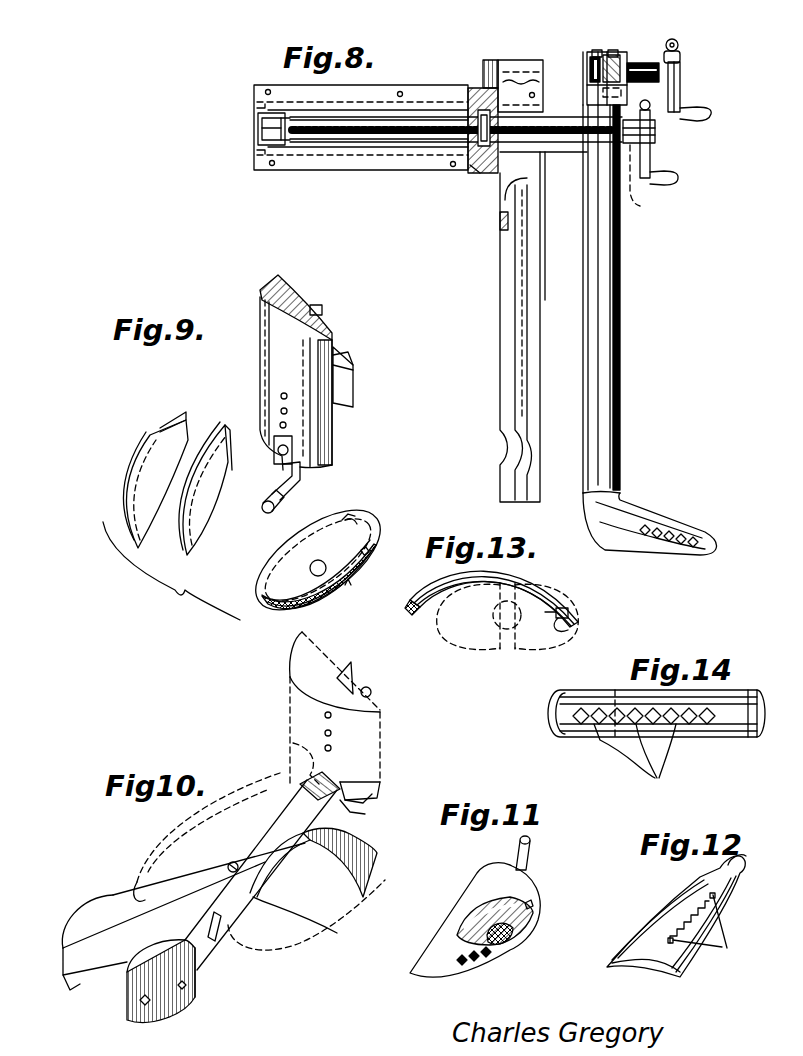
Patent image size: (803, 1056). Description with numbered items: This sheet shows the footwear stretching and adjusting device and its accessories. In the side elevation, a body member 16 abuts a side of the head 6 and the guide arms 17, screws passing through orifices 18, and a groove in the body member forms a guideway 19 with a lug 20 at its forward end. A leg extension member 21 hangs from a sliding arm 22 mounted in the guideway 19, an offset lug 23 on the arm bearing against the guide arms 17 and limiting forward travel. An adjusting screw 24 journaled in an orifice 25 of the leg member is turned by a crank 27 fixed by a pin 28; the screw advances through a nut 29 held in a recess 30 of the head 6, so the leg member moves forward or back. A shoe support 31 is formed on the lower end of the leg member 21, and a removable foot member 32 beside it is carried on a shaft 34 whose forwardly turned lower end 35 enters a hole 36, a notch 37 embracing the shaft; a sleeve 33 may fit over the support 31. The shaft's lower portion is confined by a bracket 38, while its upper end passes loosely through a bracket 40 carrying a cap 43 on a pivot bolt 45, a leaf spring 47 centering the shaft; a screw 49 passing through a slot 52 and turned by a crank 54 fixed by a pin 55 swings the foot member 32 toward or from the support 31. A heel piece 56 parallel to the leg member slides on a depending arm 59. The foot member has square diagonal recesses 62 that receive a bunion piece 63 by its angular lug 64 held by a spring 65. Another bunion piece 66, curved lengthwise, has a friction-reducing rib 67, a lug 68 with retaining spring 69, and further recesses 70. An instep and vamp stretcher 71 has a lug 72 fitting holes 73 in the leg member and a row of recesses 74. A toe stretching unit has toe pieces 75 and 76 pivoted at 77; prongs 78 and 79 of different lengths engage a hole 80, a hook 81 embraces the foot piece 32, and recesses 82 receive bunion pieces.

In FIG. 8, the head 6 is at (470, 90).
In FIG. 8, the body member 16 is at (258, 129).
In FIG. 8, the guide arms 17 is at (316, 88).
In FIG. 8, the orifices 18 is at (266, 93).
In FIG. 8, the guideway 19 is at (259, 106).
In FIG. 8, the lug 20 is at (555, 156).
In FIG. 8, the leg extension member 21 is at (622, 323).
In FIG. 9, the leg extension member 21 is at (262, 368).
In FIG. 10, the leg extension member 21 is at (390, 745).
In FIG. 8, the sliding arm 22 is at (578, 168).
In FIG. 8, the offset lug 23 is at (258, 138).
In FIG. 8, the adjusting screw 24 is at (348, 138).
In FIG. 8, the orifice 25 is at (640, 197).
In FIG. 8, the crank 27 is at (678, 178).
In FIG. 8, the pin 28 is at (655, 134).
In FIG. 8, the nut 29 is at (486, 166).
In FIG. 8, the recess 30 is at (487, 88).
In FIG. 8, the shoe support 31 is at (632, 510).
In FIG. 9, the shoe support 31 is at (208, 546).
In FIG. 10, the shoe support 31 is at (141, 868).
In FIG. 13, the shoe support 31 is at (470, 650).
In FIG. 9, the foot member 32 is at (266, 578).
In FIG. 10, the foot member 32 is at (278, 939).
In FIG. 13, the foot member 32 is at (528, 652).
In FIG. 9, the sleeve 33 is at (150, 544).
In FIG. 9, the shaft 34 is at (322, 310).
In FIG. 10, the shaft 34 is at (380, 694).
In FIG. 11, the shaft 34 is at (531, 845).
In FIG. 9, the forwardly turned lower end 35 is at (274, 514).
In FIG. 10, the forwardly turned lower end 35 is at (374, 812).
In FIG. 9, the hole 36 is at (335, 525).
In FIG. 9, the notch 37 is at (361, 514).
In FIG. 9, the bracket 38 is at (355, 388).
In FIG. 8, the bracket 40 is at (588, 92).
In FIG. 8, the cap 43 is at (616, 54).
In FIG. 8, the pivot bolt 45 is at (596, 53).
In FIG. 8, the leaf spring 47 is at (594, 80).
In FIG. 8, the screw 49 is at (681, 86).
In FIG. 8, the slot 52 is at (644, 62).
In FIG. 8, the crank 54 is at (712, 112).
In FIG. 8, the pin 55 is at (681, 52).
In FIG. 8, the heel piece 56 is at (505, 350).
In FIG. 8, the depending arm 59 is at (510, 206).
In FIG. 9, the recesses 62 is at (370, 551).
In FIG. 11, the recesses 62 is at (540, 910).
In FIG. 11, the bunion piece 63 is at (474, 905).
In FIG. 11, the angular lug 64 is at (512, 948).
In FIG. 11, the spring 65 is at (444, 953).
In FIG. 13, the bunion piece 66 is at (576, 590).
In FIG. 14, the bunion piece 66 is at (724, 696).
In FIG. 13, the rib 67 is at (424, 614).
In FIG. 14, the rib 67 is at (616, 688).
In FIG. 13, the lug 68 is at (572, 604).
In FIG. 14, the lug 68 is at (712, 738).
In FIG. 13, the retaining spring 69 is at (570, 632).
In FIG. 14, the recesses 70 is at (635, 759).
In FIG. 12, the instep and vamp stretcher 71 is at (735, 905).
In FIG. 12, the lug 72 is at (750, 860).
In FIG. 9, the holes 73 is at (280, 425).
In FIG. 10, the holes 73 is at (325, 748).
In FIG. 12, the recesses 74 is at (722, 947).
In FIG. 10, the toe piece 75 is at (128, 1006).
In FIG. 10, the toe piece 76 is at (72, 970).
In FIG. 10, the pivot 77 is at (340, 933).
In FIG. 10, the prong 78 is at (378, 800).
In FIG. 10, the prong 79 is at (300, 780).
In FIG. 10, the hole 80 is at (292, 744).
In FIG. 10, the hook 81 is at (380, 862).
In FIG. 10, the recesses 82 is at (175, 1000).